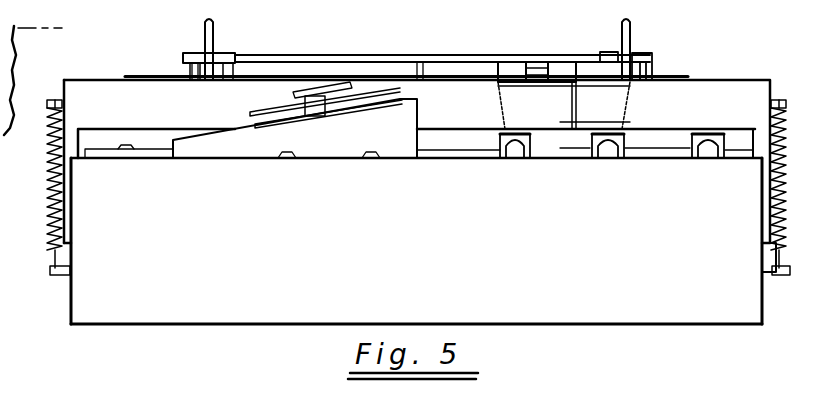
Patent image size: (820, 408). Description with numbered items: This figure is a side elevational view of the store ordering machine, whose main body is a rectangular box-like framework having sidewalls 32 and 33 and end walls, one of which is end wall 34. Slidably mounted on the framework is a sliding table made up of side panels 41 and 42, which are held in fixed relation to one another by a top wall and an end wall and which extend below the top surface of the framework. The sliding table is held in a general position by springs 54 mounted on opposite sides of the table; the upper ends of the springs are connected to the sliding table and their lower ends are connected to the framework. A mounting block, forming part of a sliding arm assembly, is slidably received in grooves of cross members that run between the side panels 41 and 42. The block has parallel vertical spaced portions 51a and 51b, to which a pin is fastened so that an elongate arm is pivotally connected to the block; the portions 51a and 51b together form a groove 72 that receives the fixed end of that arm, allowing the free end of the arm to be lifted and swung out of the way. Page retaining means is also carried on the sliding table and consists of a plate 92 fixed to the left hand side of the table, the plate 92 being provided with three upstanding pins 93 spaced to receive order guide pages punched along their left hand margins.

The sidewall 32 is at (70, 301).
The sidewall 33 is at (766, 307).
The end wall 34 is at (586, 305).
The side panel 41 is at (56, 90).
The side panel 42 is at (768, 86).
The vertical spaced portion 51a is at (513, 72).
The vertical spaced portion 51b is at (567, 72).
The spring 54 is at (48, 200).
The groove 72 is at (545, 68).
The plate 92 is at (688, 76).
The upstanding pin 93 is at (184, 68).